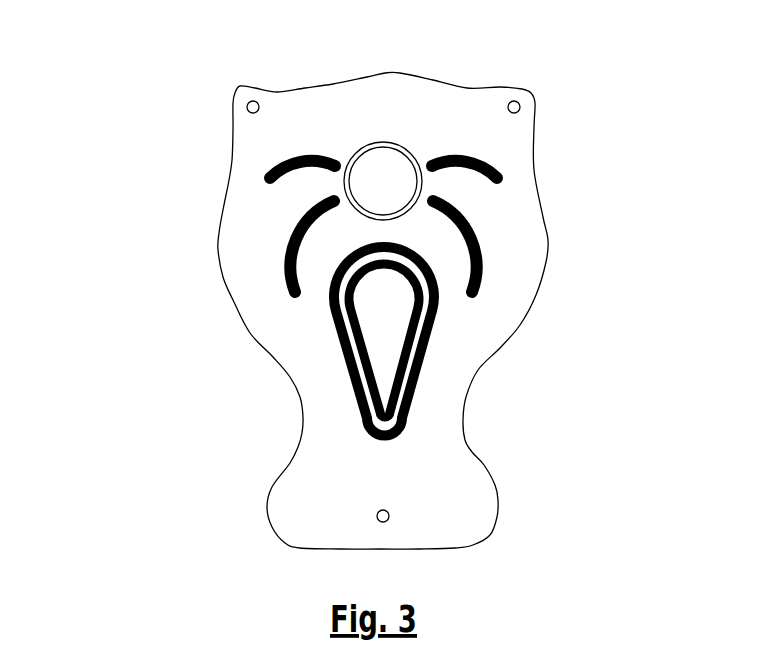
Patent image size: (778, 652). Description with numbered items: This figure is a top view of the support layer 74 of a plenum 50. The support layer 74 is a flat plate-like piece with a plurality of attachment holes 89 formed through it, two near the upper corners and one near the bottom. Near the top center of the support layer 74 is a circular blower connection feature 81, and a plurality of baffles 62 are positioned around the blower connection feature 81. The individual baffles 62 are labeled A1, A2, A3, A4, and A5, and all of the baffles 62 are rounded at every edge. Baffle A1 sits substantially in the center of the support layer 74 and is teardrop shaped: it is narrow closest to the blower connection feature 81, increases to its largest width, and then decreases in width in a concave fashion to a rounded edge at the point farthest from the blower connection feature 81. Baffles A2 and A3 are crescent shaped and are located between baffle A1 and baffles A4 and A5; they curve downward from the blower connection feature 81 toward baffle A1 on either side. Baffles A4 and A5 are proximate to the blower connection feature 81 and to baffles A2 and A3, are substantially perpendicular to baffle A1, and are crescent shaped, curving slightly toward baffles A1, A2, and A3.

The plenum 50 is at (329, 310).
The baffles 62 is at (387, 332).
The support layer 74 is at (425, 465).
The blower connection feature 81 is at (381, 172).
The attachment holes 89 is at (245, 102).
The baffle A1 is at (387, 332).
The baffle A2 is at (293, 232).
The baffle A3 is at (474, 232).
The baffle A4 is at (278, 164).
The baffle A5 is at (500, 170).